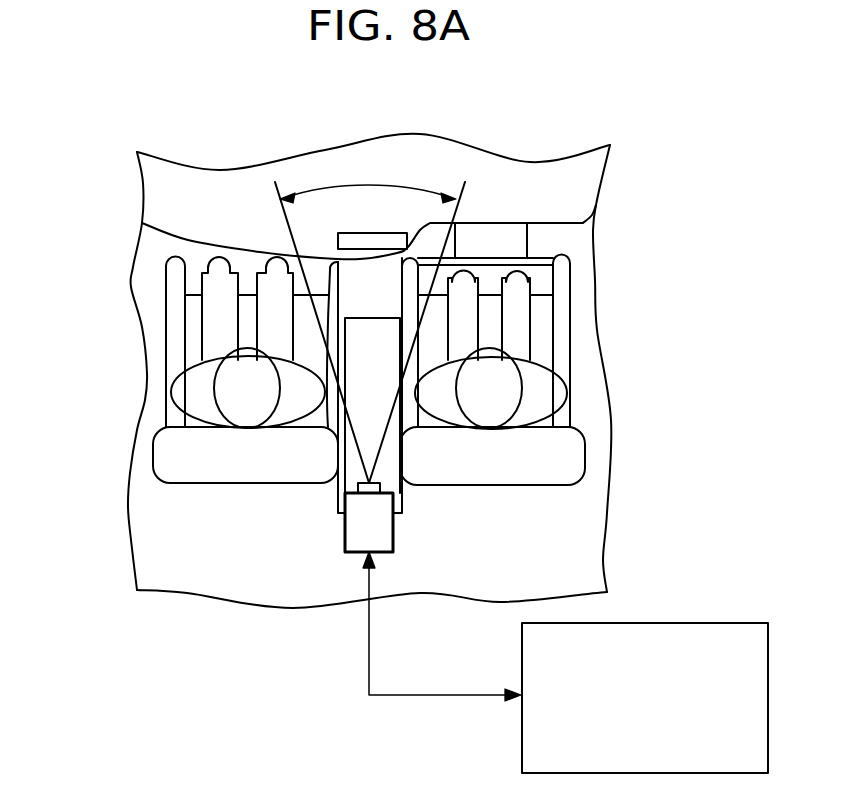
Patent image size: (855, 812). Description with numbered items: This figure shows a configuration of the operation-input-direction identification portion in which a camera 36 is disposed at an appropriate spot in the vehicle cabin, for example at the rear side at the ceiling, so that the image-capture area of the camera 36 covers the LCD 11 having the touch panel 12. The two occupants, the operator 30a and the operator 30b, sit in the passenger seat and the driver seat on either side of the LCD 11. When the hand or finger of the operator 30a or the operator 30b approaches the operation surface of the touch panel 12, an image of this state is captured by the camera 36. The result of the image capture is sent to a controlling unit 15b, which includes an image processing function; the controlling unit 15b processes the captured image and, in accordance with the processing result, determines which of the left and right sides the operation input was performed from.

The LCD 11 is at (383, 166).
The touch panel 12 is at (387, 233).
The operator 30a is at (198, 397).
The operator 30b is at (543, 388).
The camera 36 is at (343, 530).
The controlling unit 15b is at (712, 622).